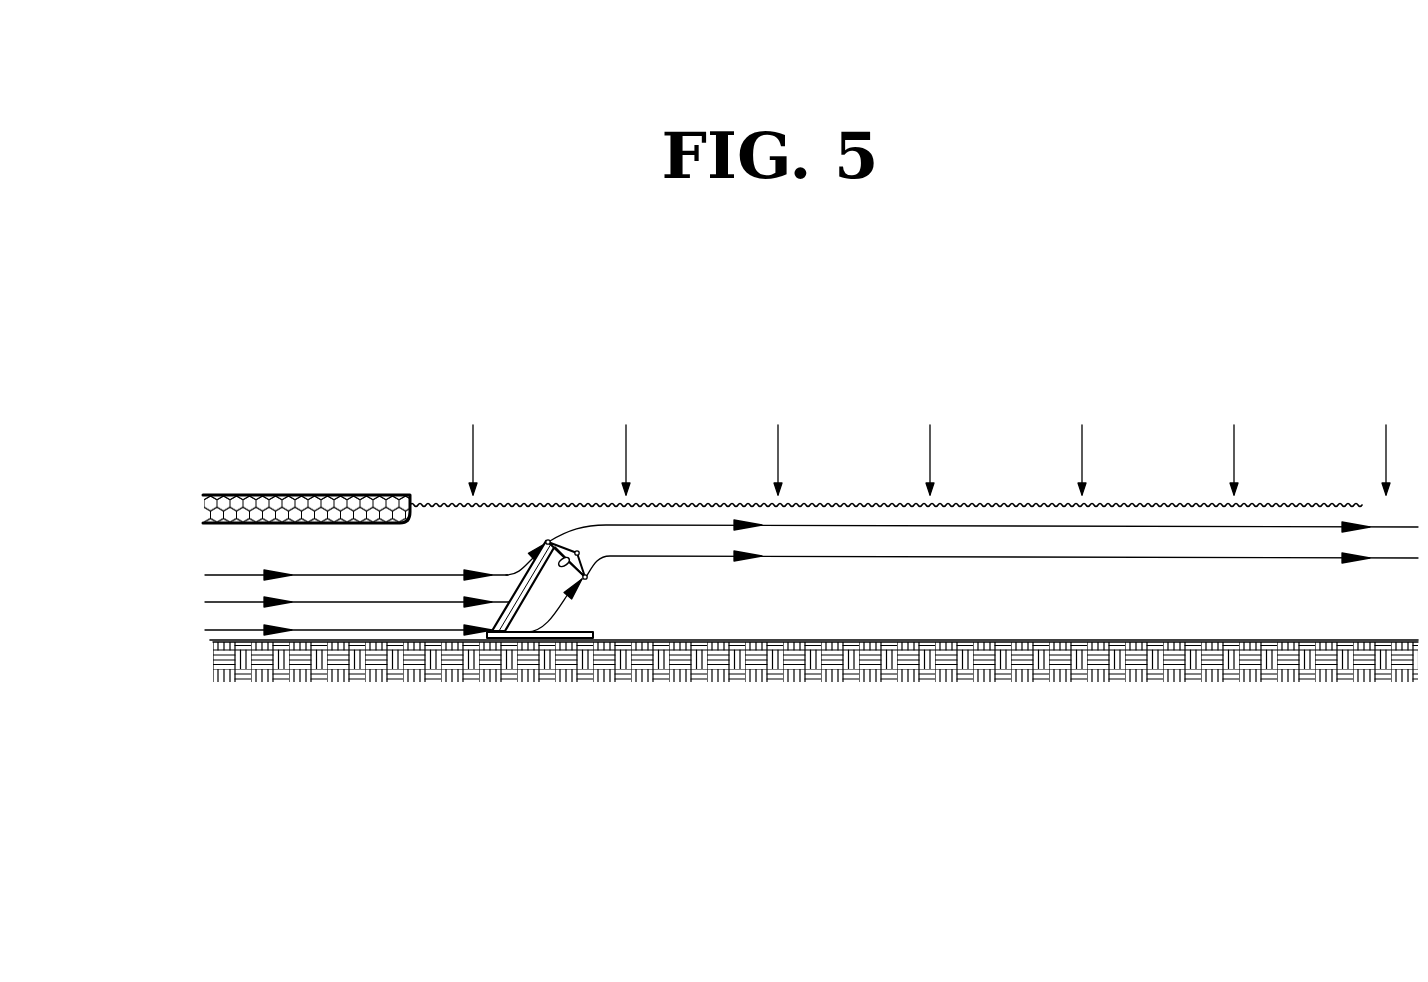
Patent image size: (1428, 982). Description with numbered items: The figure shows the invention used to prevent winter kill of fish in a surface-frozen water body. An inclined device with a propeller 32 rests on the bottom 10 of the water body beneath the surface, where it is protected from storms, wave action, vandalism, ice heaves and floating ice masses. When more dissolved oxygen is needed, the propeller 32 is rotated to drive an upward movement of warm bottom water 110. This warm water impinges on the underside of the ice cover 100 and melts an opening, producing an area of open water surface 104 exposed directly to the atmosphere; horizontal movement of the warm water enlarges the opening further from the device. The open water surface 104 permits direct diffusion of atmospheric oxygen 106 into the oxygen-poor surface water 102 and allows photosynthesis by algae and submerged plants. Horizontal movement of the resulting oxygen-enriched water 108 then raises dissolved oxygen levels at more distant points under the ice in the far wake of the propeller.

The bottom 10 is at (587, 683).
The propeller 32 is at (586, 579).
The ice cover 100 is at (316, 495).
The oxygen-poor surface water 102 is at (623, 476).
The open water surface 104 is at (448, 502).
The atmospheric oxygen 106 is at (783, 443).
The oxygen-enriched water 108 is at (1292, 548).
The warm bottom water 110 is at (225, 592).